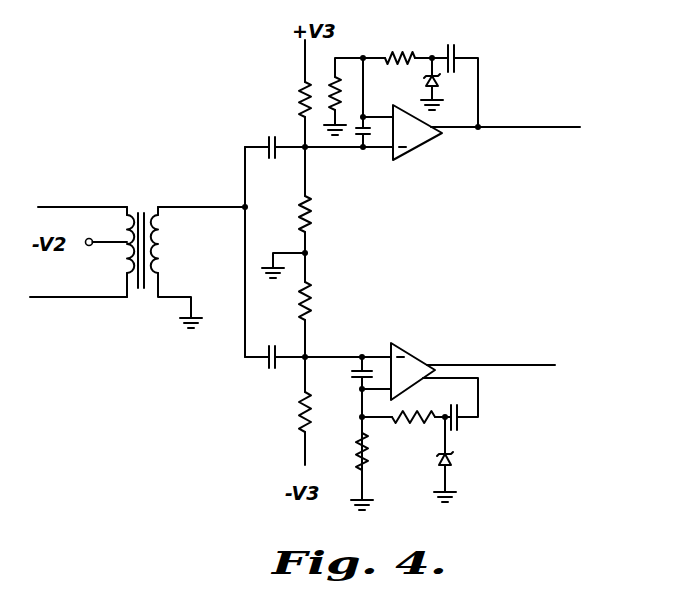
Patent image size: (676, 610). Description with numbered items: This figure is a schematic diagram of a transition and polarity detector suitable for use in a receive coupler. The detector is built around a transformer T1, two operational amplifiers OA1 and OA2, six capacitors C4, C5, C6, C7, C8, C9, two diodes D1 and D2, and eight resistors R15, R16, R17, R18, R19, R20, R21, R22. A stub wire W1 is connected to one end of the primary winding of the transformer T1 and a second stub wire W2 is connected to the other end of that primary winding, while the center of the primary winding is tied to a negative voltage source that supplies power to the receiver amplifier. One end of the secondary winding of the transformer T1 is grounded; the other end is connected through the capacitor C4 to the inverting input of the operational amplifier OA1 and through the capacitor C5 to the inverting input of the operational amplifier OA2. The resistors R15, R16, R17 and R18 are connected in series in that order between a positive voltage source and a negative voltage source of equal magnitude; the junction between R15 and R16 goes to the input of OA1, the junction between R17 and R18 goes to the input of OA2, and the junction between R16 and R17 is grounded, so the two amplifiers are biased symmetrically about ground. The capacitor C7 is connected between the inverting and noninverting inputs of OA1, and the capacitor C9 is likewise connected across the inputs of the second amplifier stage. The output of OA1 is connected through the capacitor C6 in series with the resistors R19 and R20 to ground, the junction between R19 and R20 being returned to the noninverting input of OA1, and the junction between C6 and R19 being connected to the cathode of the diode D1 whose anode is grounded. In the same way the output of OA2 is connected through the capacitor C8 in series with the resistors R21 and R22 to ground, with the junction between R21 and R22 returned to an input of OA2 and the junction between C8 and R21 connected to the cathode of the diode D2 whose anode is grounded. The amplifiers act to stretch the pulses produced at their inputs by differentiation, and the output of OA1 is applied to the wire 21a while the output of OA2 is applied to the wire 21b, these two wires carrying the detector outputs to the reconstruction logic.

The stub wire W1 is at (48, 206).
The stub wire W2 is at (55, 300).
The transformer T1 is at (142, 205).
The resistor R15 is at (287, 99).
The resistor R16 is at (330, 214).
The resistor R17 is at (330, 301).
The resistor R18 is at (286, 412).
The resistor R19 is at (405, 46).
The resistor R20 is at (341, 97).
The resistor R21 is at (411, 431).
The resistor R22 is at (384, 456).
The capacitor C4 is at (275, 135).
The capacitor C5 is at (275, 346).
The capacitor C6 is at (455, 74).
The capacitor C7 is at (377, 139).
The capacitor C8 is at (451, 417).
The capacitor C9 is at (348, 378).
The diode D1 is at (447, 84).
The diode D2 is at (455, 462).
The operational amplifier OA1 is at (407, 152).
The operational amplifier OA2 is at (399, 345).
The wire 21a is at (516, 127).
The wire 21b is at (492, 363).